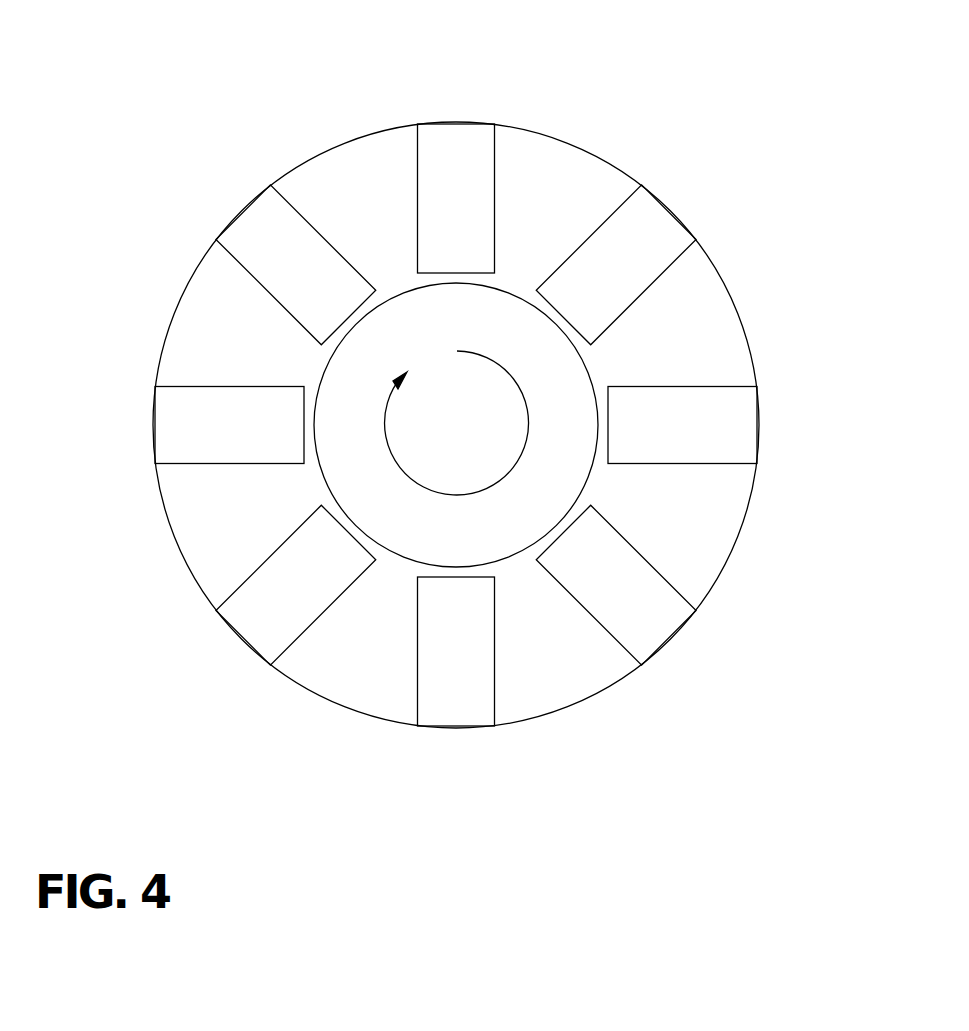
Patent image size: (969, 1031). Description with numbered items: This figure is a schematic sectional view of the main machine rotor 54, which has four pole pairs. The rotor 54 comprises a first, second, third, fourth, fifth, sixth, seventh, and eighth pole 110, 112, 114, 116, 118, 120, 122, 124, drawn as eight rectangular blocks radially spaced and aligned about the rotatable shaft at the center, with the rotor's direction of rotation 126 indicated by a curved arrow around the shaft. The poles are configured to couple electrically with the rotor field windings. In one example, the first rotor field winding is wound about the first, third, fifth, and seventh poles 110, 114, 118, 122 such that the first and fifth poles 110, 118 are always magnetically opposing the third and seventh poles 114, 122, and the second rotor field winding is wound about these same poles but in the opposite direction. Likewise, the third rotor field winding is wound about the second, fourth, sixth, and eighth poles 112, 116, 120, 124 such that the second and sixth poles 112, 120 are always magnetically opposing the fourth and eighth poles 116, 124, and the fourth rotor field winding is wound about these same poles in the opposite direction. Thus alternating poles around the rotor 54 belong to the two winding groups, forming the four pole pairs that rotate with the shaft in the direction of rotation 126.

The main machine rotor 54 is at (250, 39).
The first pole 110 is at (463, 153).
The second pole 112 is at (267, 230).
The third pole 114 is at (190, 432).
The fourth pole 116 is at (267, 622).
The fifth pole 118 is at (453, 693).
The sixth pole 120 is at (650, 623).
The seventh pole 122 is at (722, 427).
The eighth pole 124 is at (650, 222).
The direction of rotation 126 is at (523, 453).